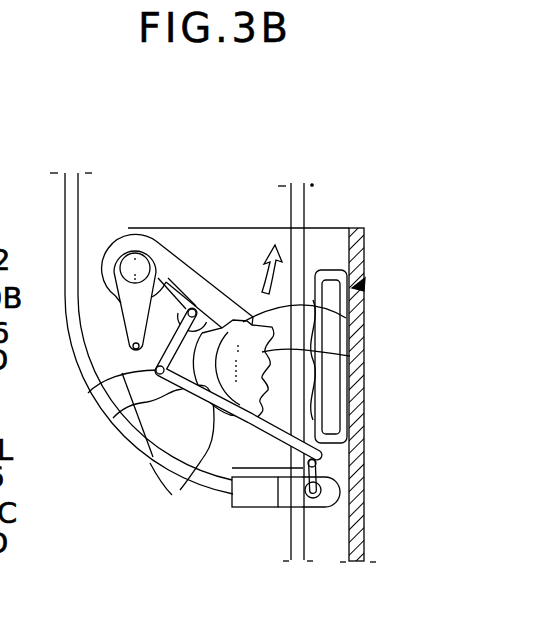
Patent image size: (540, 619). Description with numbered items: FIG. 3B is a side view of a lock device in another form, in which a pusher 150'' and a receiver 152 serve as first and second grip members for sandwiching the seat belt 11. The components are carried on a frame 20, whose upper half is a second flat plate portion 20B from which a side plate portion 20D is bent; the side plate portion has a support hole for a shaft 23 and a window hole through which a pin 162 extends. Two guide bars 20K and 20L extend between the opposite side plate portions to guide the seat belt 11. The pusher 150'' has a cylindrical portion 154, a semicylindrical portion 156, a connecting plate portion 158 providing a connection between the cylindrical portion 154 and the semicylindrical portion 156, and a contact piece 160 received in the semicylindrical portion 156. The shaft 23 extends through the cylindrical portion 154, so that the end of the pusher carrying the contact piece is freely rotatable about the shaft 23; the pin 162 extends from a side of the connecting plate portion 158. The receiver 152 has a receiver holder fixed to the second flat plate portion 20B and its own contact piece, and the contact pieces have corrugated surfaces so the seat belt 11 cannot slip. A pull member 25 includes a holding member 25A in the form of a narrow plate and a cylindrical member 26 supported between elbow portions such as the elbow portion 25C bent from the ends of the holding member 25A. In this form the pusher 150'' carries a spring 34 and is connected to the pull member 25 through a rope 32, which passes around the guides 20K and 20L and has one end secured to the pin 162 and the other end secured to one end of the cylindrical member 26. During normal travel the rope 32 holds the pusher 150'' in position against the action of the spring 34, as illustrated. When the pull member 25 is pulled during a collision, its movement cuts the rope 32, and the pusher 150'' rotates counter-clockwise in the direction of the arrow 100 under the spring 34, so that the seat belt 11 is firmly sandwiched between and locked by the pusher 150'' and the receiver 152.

The seat belt 11 is at (303, 210).
The frame 20 is at (366, 535).
The second flat plate portion 20B is at (364, 310).
The side plate portion 20D is at (120, 431).
The guide bar 20K is at (96, 394).
The guide bar 20L is at (350, 452).
The shaft 23 is at (137, 262).
The pull member 25 is at (224, 518).
The holding member 25A is at (268, 510).
The elbow portion 25C is at (340, 503).
The cylindrical member 26 is at (321, 488).
The rope 32 is at (183, 492).
The spring 34 is at (116, 322).
The arrow 100 is at (258, 232).
The pusher 150'' is at (247, 196).
The receiver 152 is at (360, 284).
The cylindrical portion 154 is at (118, 243).
The semicylindrical portion 156 is at (310, 335).
The connecting plate portion 158 is at (200, 270).
The contact piece 160 is at (312, 362).
The pin 162 is at (148, 463).